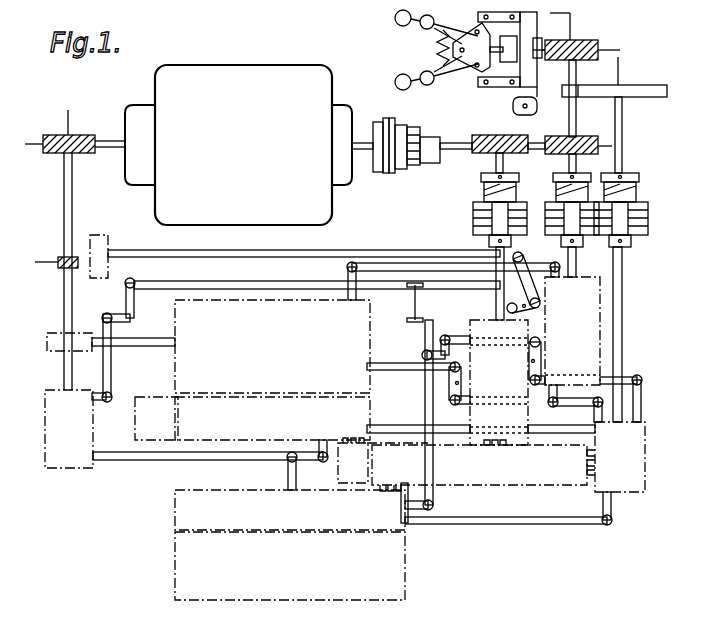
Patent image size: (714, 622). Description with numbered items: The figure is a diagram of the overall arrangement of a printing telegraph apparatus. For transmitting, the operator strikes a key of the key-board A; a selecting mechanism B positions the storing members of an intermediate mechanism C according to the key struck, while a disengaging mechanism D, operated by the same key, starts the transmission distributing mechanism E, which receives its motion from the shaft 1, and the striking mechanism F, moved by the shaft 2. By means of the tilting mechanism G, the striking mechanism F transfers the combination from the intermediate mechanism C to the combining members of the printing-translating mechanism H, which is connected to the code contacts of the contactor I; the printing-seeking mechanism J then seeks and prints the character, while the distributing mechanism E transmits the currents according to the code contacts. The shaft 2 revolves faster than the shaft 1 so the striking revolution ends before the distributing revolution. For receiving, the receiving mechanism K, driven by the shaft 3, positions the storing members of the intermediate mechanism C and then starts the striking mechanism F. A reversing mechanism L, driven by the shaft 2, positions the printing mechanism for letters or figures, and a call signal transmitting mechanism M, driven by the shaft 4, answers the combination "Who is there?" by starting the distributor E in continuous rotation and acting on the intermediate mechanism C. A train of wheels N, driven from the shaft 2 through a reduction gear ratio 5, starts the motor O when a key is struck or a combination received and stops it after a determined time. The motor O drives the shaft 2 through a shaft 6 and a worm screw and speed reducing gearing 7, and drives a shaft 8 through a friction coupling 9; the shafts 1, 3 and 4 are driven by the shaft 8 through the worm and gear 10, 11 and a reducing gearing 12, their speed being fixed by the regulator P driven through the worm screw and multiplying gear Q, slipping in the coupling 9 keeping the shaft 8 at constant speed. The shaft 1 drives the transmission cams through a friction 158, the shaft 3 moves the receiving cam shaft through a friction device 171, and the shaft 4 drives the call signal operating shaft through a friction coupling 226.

The shaft 1 is at (568, 122).
The shaft 2 is at (73, 201).
The shaft 3 is at (496, 163).
The shaft 4 is at (624, 140).
The reduction gear ratio 5 is at (63, 260).
The shaft 6 is at (113, 141).
The worm screw and speed reducing gearing 7 is at (78, 135).
The shaft 8 is at (458, 143).
The friction coupling 9 is at (405, 132).
The worm 10 is at (484, 134).
The gear 11 is at (584, 116).
The reducing gearing 12 is at (643, 92).
The friction 158 is at (546, 229).
The friction device 171 is at (471, 228).
The friction coupling 226 is at (631, 221).
The key-board A is at (290, 566).
The selecting mechanism B is at (290, 510).
The intermediate mechanism C is at (479, 465).
The disengaging mechanism D is at (425, 400).
The transmission distributing mechanism E is at (572, 331).
The striking mechanism F is at (52, 414).
The tilting mechanism G is at (353, 460).
The printing-translating mechanism H is at (272, 418).
The contactor I is at (156, 418).
The printing-seeking mechanism J is at (272, 346).
The receiving mechanism K is at (499, 382).
The reversing mechanism L is at (62, 334).
The call signal transmitting mechanism M is at (616, 457).
The train of wheels N is at (99, 256).
The motor O is at (238, 145).
The regulator P is at (463, 62).
The worm screw and multiplying gear Q is at (588, 44).